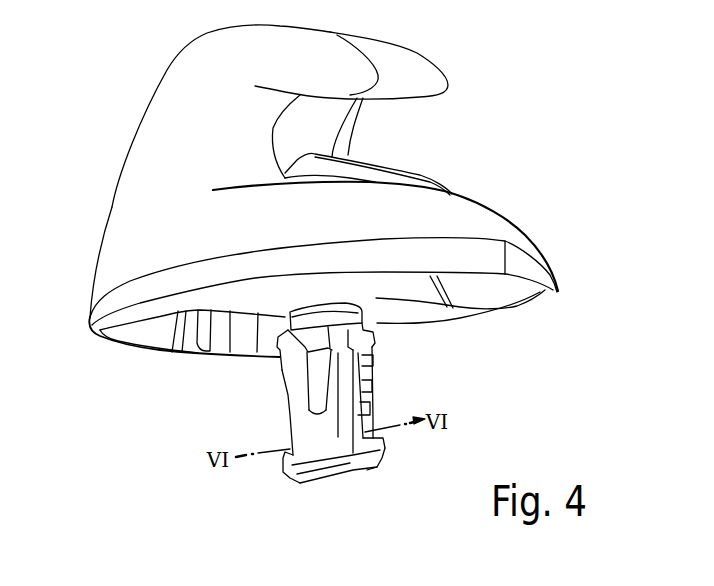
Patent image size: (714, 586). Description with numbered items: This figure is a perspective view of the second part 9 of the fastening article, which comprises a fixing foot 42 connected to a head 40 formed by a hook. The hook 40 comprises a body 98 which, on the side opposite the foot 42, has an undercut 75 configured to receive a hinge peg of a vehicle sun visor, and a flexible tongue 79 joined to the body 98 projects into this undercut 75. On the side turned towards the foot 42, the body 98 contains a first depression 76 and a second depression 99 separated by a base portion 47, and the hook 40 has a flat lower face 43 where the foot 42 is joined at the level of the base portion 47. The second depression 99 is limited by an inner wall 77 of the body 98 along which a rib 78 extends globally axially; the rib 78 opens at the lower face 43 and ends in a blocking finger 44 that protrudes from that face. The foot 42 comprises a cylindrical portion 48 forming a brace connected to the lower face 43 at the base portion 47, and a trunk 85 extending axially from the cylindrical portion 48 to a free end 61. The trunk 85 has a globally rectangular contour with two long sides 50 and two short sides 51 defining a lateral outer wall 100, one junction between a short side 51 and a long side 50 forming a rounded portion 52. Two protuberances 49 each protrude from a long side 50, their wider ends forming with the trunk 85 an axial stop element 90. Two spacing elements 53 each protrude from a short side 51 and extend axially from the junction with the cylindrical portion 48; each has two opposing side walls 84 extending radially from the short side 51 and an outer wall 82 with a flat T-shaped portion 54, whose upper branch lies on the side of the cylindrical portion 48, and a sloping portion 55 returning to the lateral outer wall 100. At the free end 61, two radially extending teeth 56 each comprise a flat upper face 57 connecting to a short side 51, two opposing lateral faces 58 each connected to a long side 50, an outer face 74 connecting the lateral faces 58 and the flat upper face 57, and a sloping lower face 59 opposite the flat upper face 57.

The second part 9 is at (548, 101).
The head 40 is at (173, 62).
The body 98 is at (120, 190).
The undercut 75 is at (368, 132).
The flexible tongue 79 is at (393, 165).
The flat lower face 43 is at (505, 286).
The base portion 47 is at (400, 318).
The first depression 76 is at (483, 290).
The inner wall 77 is at (155, 337).
The rib 78 is at (190, 328).
The blocking finger 44 is at (192, 338).
The second depression 99 is at (241, 337).
The cylindrical portion 48 is at (292, 320).
The axial stop element 90 is at (311, 312).
The outer wall 82 is at (358, 320).
The long side 50 is at (298, 372).
The lateral outer wall 100 is at (314, 409).
The protuberance 49 is at (317, 397).
The side wall 84 is at (364, 360).
The flat T-shaped portion 54 is at (372, 370).
The spacing element 53 is at (367, 383).
The sloping portion 55 is at (367, 408).
The short side 51 is at (373, 435).
The outer face 74 is at (380, 453).
The tooth 56 is at (380, 467).
The sloping lower face 59 is at (377, 467).
The lateral face 58 is at (360, 467).
The rounded portion 52 is at (348, 467).
The free end 61 is at (318, 467).
The trunk 85 is at (307, 463).
The fixing foot 42 is at (295, 477).
The flat upper face 57 is at (288, 453).